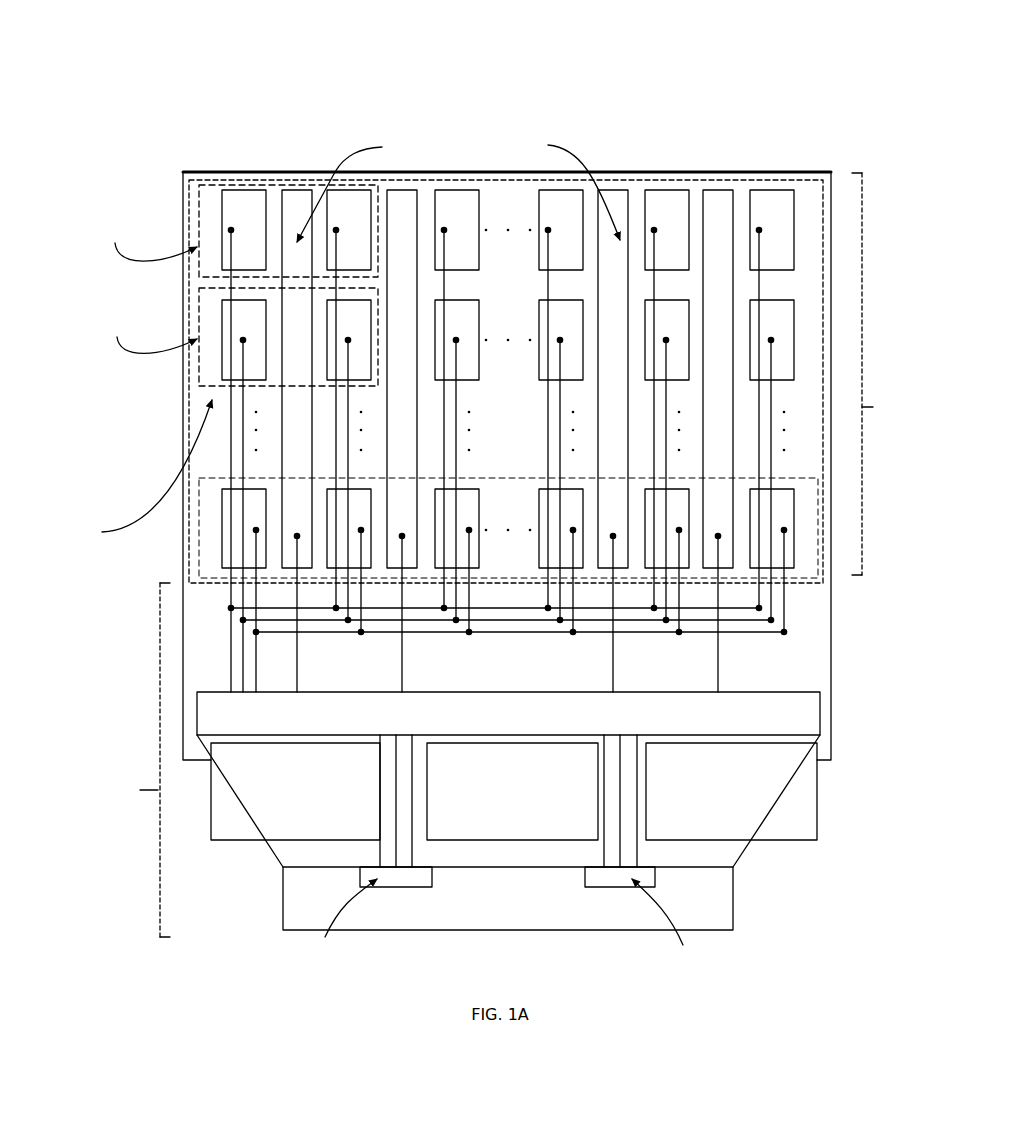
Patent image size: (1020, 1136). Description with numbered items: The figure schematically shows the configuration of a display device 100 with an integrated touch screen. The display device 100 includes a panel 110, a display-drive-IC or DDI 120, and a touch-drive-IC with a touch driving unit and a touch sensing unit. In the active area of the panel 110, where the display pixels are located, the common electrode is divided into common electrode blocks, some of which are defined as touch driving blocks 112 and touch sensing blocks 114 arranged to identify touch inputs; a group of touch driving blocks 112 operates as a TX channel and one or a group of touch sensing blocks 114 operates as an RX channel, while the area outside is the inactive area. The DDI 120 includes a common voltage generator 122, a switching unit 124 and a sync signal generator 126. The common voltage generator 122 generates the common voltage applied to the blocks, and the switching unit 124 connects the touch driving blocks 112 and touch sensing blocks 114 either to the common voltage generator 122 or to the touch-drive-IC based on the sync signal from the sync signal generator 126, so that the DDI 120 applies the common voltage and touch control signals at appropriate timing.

The display device 100 is at (172, 31).
The panel 110 is at (182, 405).
The touch driving blocks 112 is at (242, 212).
The touch sensing blocks 114 is at (296, 194).
The display-drive-IC 120 is at (508, 713).
The common voltage generator 122 is at (295, 791).
The switching unit 124 is at (512, 791).
The sync signal generator 126 is at (731, 791).